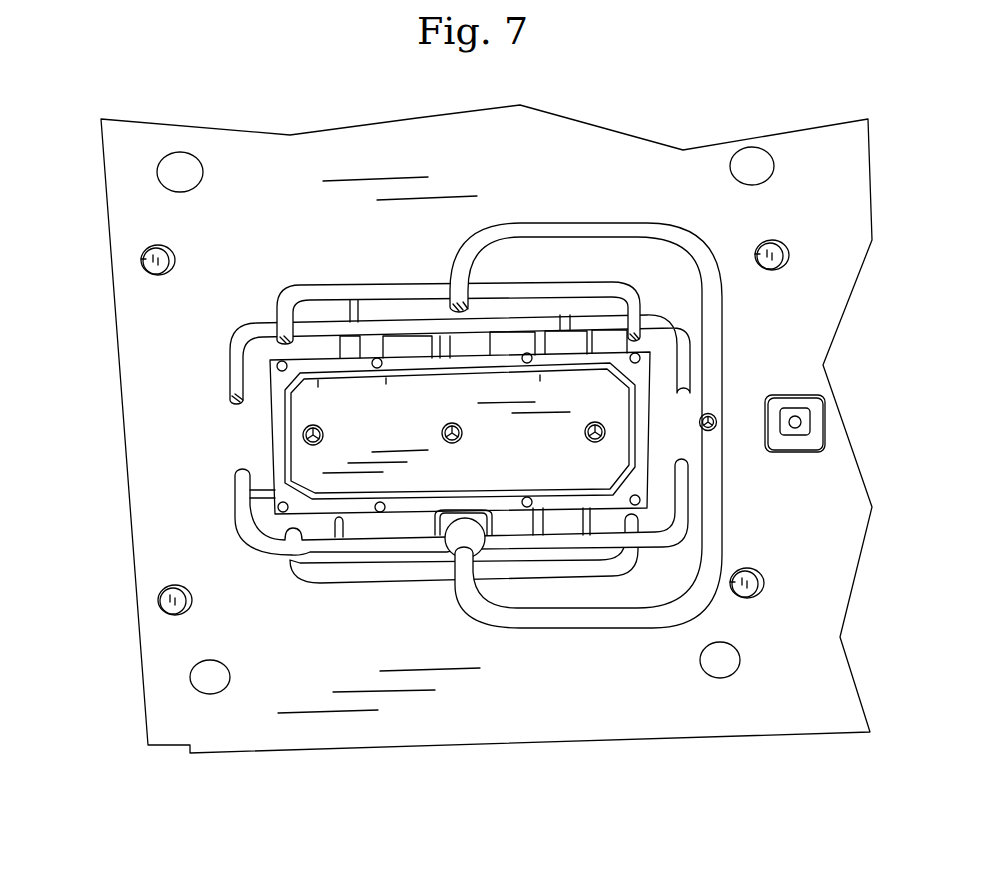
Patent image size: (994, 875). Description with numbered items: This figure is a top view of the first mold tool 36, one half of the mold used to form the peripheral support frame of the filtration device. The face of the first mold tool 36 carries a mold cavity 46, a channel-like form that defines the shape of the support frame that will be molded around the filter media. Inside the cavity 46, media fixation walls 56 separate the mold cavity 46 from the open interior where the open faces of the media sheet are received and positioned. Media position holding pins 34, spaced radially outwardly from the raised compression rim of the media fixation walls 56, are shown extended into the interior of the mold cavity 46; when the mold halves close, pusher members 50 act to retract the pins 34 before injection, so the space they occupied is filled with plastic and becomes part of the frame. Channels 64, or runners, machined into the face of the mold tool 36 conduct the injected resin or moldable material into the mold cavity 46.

The first mold tool 36 is at (592, 150).
The media position holding pins 34 is at (377, 358).
The mold cavity 46 is at (635, 370).
The pusher members 50 is at (146, 254).
The media fixation walls 56 is at (297, 383).
The channels 64 is at (612, 237).